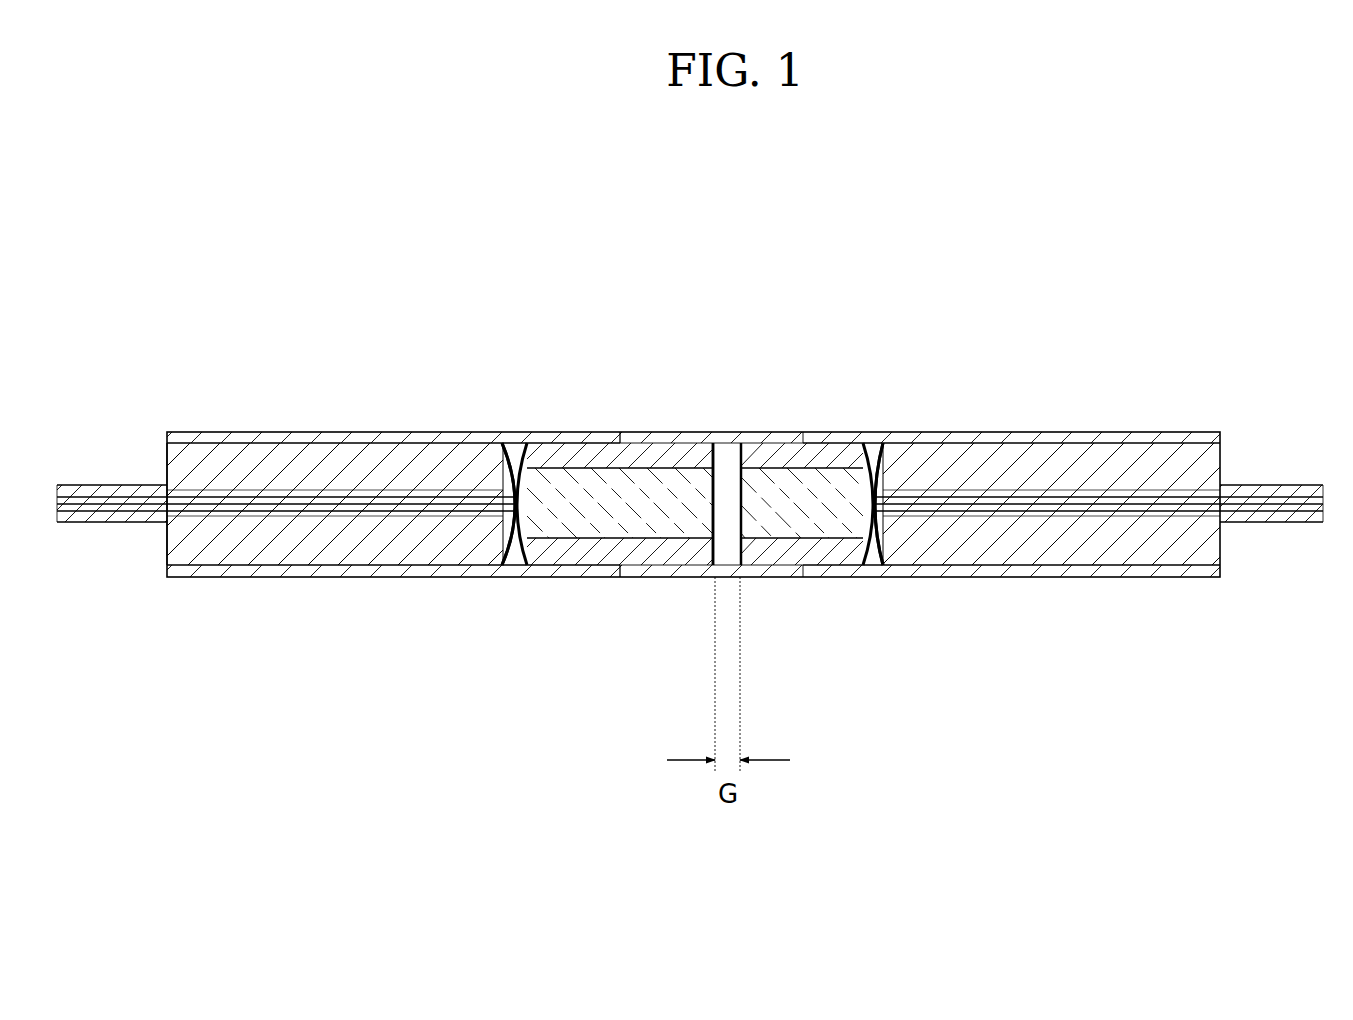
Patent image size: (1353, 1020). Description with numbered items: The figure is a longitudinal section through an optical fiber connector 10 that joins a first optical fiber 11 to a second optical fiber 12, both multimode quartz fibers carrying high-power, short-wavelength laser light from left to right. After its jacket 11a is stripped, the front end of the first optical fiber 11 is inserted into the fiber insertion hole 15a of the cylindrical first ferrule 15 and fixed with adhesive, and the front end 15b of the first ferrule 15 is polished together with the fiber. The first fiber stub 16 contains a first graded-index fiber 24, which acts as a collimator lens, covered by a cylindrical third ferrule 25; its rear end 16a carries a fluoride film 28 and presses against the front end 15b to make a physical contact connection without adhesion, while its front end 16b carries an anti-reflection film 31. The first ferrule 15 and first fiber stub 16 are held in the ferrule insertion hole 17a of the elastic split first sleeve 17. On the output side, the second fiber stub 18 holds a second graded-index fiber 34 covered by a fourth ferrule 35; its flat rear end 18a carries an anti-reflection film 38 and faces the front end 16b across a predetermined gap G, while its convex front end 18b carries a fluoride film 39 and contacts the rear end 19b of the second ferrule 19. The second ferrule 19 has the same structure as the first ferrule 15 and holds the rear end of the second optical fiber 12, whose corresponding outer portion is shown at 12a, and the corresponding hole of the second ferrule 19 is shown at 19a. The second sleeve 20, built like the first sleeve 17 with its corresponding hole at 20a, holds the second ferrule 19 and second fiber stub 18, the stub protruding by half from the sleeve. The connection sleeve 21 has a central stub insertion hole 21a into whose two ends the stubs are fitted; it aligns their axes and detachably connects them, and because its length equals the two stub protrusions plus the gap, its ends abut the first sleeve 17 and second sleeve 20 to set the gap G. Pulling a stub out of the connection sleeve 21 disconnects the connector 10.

The optical fiber connector 10 is at (1180, 362).
The first optical fiber 11 is at (78, 490).
The jacket 11a is at (108, 523).
The second optical fiber 12 is at (1275, 495).
The second optical fiber end portion 12a is at (1262, 523).
The first ferrule 15 is at (202, 572).
The fiber insertion hole 15a is at (283, 490).
The front end of first ferrule 15b is at (503, 575).
The first fiber stub 16 is at (546, 436).
The rear end of first fiber stub 16a is at (512, 435).
The front end of first fiber stub 16b is at (718, 445).
The first sleeve 17 is at (378, 432).
The ferrule insertion hole 17a is at (375, 570).
The second fiber stub 18 is at (788, 440).
The rear end of second fiber stub 18a is at (717, 572).
The front end of second fiber stub 18b is at (878, 440).
The second ferrule 19 is at (1035, 450).
The second holder fiber hole 19a is at (1063, 490).
The rear end of second ferrule 19b is at (890, 572).
The second sleeve 20 is at (1105, 432).
The second lower sleeve 20a is at (1182, 560).
The connection sleeve 21 is at (640, 433).
The stub insertion hole 21a is at (690, 440).
The first graded-index fiber 24 is at (597, 583).
The third ferrule 25 is at (603, 445).
The fluoride film 28 is at (543, 560).
The anti-reflection film 31 is at (673, 560).
The second graded-index fiber 34 is at (775, 570).
The fourth ferrule 35 is at (840, 450).
The anti-reflection film 38 is at (778, 442).
The fluoride film 39 is at (850, 573).